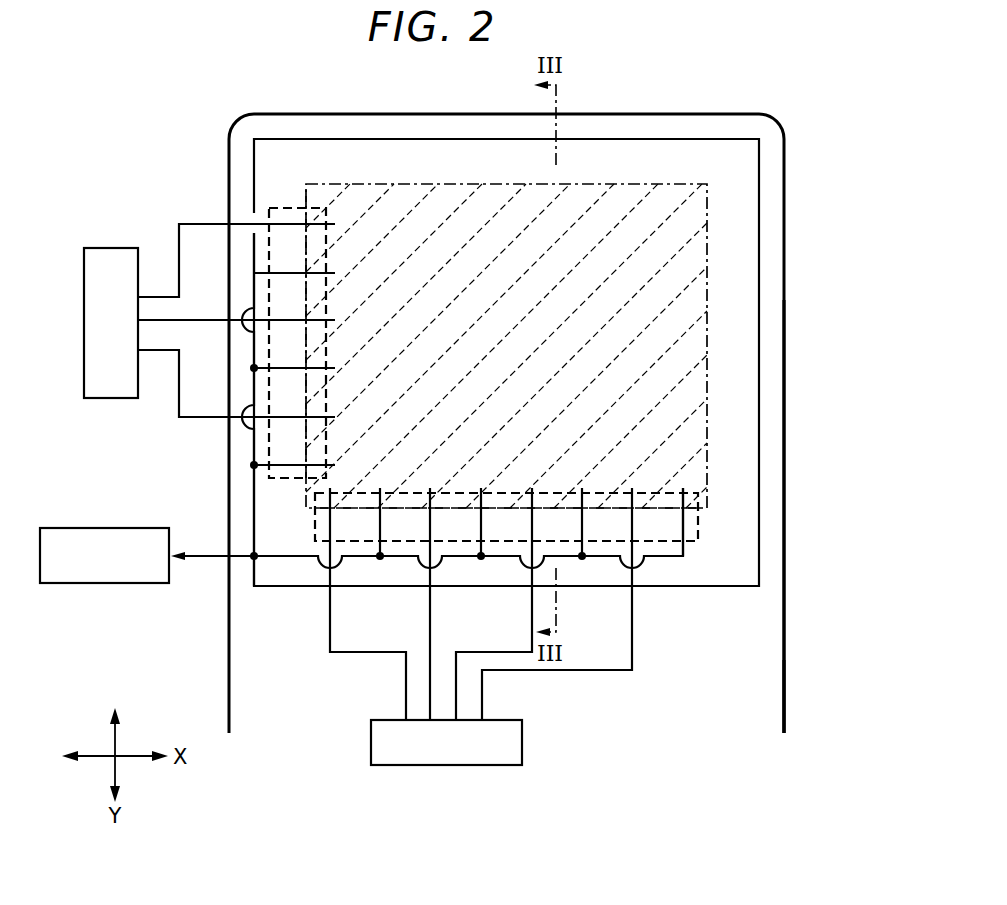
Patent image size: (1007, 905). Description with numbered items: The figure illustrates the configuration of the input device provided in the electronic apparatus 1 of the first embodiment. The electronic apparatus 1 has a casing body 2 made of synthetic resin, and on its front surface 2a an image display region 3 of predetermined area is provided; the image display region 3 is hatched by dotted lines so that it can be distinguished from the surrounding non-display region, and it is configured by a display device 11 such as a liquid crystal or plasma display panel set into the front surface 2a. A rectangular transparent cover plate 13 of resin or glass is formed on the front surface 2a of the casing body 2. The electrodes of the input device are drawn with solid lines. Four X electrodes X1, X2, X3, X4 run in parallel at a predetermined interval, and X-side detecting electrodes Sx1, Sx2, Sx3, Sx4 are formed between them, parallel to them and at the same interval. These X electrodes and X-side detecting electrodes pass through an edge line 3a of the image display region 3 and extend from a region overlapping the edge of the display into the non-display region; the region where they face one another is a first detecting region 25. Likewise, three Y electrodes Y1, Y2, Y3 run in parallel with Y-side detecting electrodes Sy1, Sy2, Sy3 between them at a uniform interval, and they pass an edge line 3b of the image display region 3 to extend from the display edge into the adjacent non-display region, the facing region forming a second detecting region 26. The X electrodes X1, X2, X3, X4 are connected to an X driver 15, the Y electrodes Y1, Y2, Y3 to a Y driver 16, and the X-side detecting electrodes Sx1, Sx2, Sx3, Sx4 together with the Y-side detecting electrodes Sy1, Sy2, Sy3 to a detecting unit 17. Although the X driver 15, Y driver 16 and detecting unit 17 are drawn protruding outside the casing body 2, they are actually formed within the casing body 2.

The electronic apparatus 1 is at (797, 190).
The casing body 2 is at (787, 631).
The front surface 2a is at (756, 688).
The image display region 3 is at (690, 300).
The edge line 3a is at (651, 500).
The edge line 3b is at (308, 193).
The display device 11 is at (707, 373).
The cover plate 13 is at (747, 237).
The X driver 15 is at (447, 767).
The Y driver 16 is at (117, 247).
The detecting unit 17 is at (126, 585).
The first detecting region 25 is at (698, 530).
The second detecting region 26 is at (293, 207).
The X electrode X1 is at (330, 522).
The X electrode X2 is at (430, 523).
The X electrode X3 is at (532, 523).
The X electrode X4 is at (632, 523).
The X-side detecting electrode Sx1 is at (379, 523).
The X-side detecting electrode Sx2 is at (481, 523).
The X-side detecting electrode Sx3 is at (582, 523).
The X-side detecting electrode Sx4 is at (683, 519).
The Y electrode Y1 is at (284, 222).
The Y electrode Y2 is at (287, 322).
The Y electrode Y3 is at (288, 420).
The Y-side detecting electrode Sy1 is at (277, 274).
The Y-side detecting electrode Sy2 is at (285, 368).
The Y-side detecting electrode Sy3 is at (273, 468).